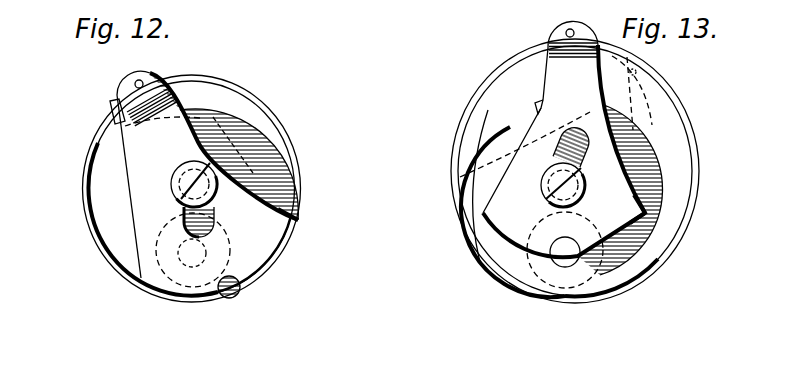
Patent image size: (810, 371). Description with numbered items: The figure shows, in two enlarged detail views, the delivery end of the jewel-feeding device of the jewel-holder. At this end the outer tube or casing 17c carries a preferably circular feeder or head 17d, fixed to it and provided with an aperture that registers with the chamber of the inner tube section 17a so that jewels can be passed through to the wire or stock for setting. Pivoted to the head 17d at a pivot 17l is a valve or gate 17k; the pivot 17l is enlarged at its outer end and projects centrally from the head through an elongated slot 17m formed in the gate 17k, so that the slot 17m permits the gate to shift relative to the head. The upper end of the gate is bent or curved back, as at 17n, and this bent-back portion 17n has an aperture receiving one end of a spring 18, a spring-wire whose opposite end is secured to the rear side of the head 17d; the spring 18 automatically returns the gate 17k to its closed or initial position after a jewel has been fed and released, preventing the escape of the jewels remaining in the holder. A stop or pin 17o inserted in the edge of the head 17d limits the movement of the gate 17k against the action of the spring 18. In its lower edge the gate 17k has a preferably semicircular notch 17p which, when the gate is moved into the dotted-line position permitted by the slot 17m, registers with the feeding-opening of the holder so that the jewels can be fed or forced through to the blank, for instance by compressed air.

In FIG. 12, the spring 18 is at (192, 184).
In FIG. 13, the spring 18 is at (680, 107).
In FIG. 13, the inner tube section 17a is at (508, 127).
In FIG. 12, the outer tube or casing 17c is at (233, 255).
In FIG. 12, the feeder or head 17d is at (253, 157).
In FIG. 13, the feeder or head 17d is at (660, 188).
In FIG. 12, the valve or gate 17k is at (299, 219).
In FIG. 13, the valve or gate 17k is at (634, 149).
In FIG. 12, the pivot 17l is at (187, 191).
In FIG. 13, the pivot 17l is at (550, 191).
In FIG. 13, the elongated slot 17m is at (577, 110).
In FIG. 12, the bent-back upper end 17n is at (117, 70).
In FIG. 13, the bent-back upper end 17n is at (548, 20).
In FIG. 12, the stop or pin 17o is at (111, 102).
In FIG. 13, the stop or pin 17o is at (539, 104).
In FIG. 12, the semicircular notch 17p is at (238, 293).
In FIG. 13, the semicircular notch 17p is at (565, 255).